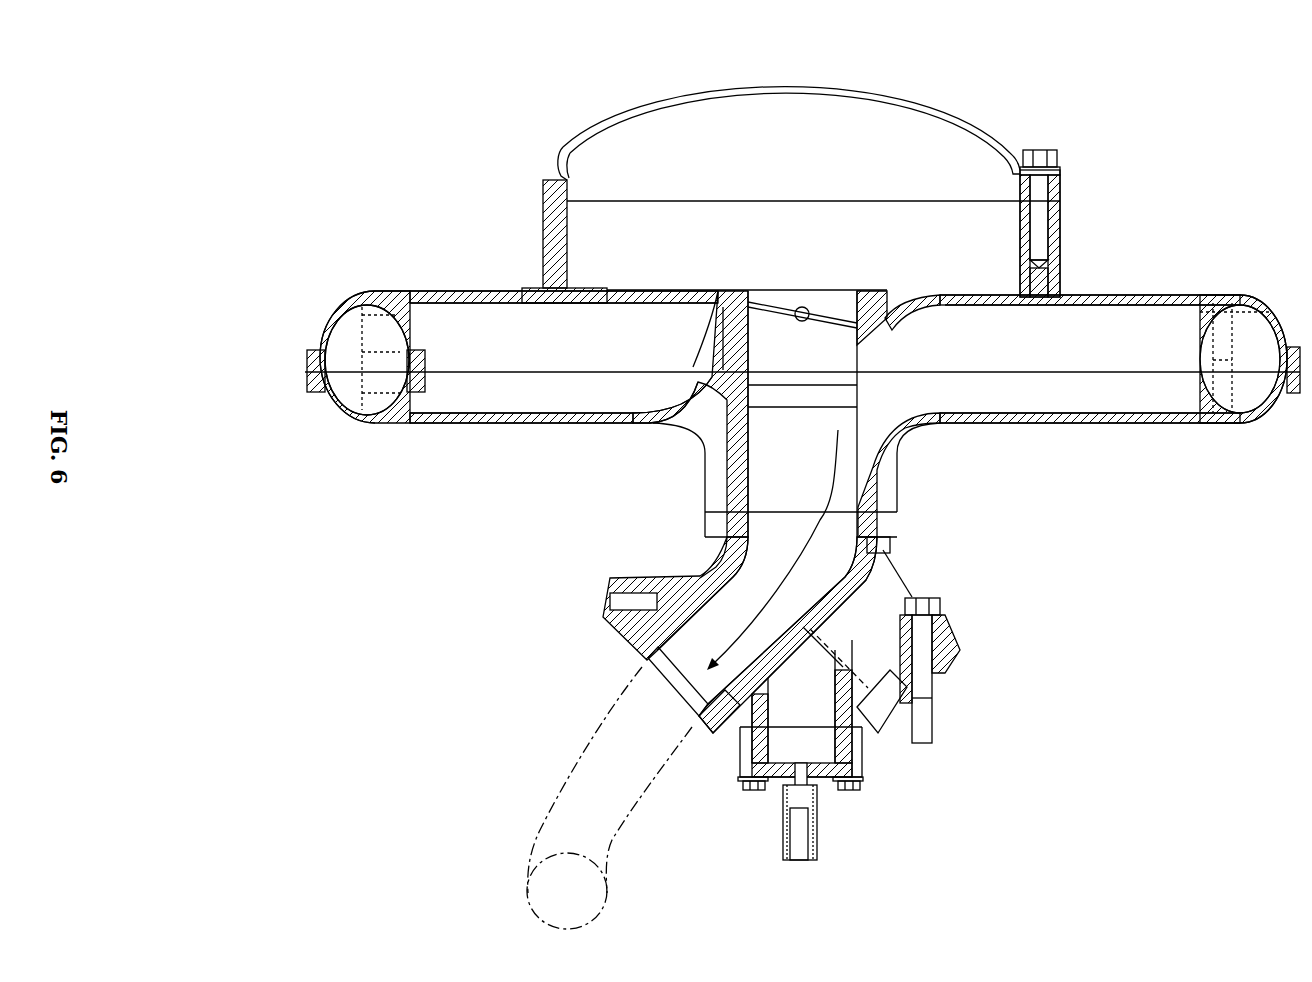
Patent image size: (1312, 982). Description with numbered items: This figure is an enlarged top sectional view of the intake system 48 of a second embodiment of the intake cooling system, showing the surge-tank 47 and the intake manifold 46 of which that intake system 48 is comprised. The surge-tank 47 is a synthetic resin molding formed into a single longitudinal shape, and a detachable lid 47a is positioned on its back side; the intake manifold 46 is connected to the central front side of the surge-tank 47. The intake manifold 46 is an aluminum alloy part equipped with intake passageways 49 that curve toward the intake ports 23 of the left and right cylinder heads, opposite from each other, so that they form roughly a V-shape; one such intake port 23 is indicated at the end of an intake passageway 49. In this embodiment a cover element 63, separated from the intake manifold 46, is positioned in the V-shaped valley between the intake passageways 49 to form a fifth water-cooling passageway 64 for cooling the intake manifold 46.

The intake port 23 is at (556, 780).
The intake manifold 46 is at (922, 580).
The surge-tank 47 is at (586, 118).
The detachable lid 47a is at (703, 104).
The intake system 48 is at (984, 115).
The intake passageway 49 is at (736, 578).
The cover element 63 is at (745, 758).
The fifth water-cooling passageway 64 is at (817, 740).